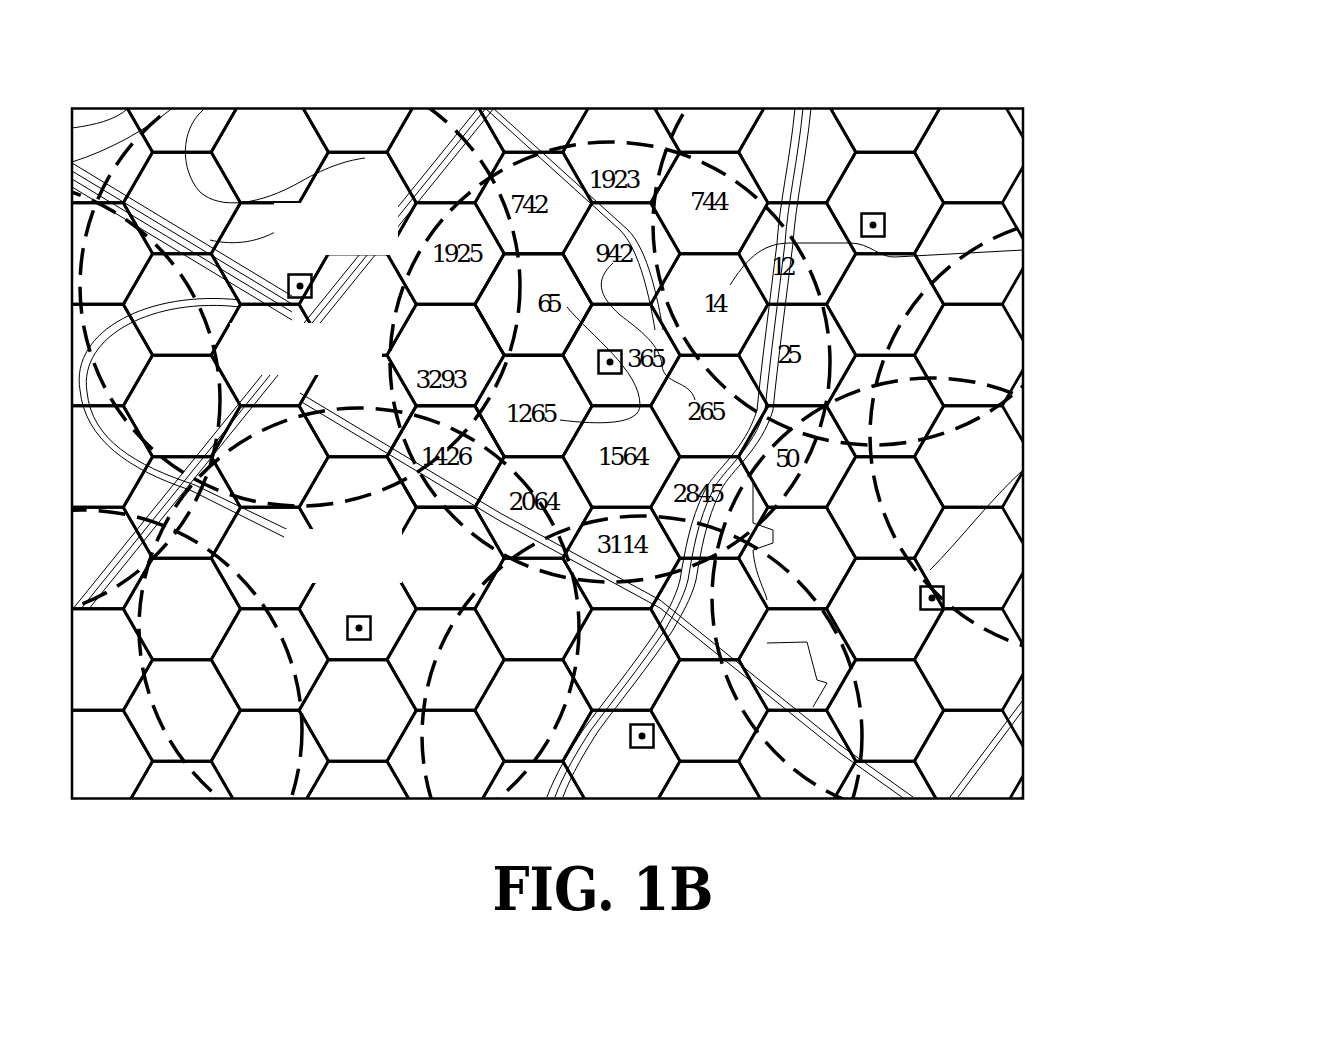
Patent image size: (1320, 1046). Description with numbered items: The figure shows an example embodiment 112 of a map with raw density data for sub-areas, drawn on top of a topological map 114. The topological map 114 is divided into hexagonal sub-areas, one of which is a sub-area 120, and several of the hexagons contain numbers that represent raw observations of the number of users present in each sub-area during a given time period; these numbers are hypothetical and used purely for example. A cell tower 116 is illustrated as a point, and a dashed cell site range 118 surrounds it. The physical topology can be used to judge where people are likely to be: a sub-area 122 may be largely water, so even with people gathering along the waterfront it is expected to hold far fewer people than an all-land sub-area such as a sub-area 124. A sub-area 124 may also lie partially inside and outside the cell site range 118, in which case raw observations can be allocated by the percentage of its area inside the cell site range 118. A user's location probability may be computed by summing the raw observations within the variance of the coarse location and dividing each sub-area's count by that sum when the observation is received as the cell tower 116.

The map with raw density data for sub-areas 112 is at (1066, 698).
The topological map 114 is at (973, 475).
The cell tower 116 is at (333, 357).
The cell site range 118 is at (545, 146).
The sub-area 120 is at (625, 150).
The sub-area 122 is at (498, 299).
The sub-area 124 is at (430, 476).